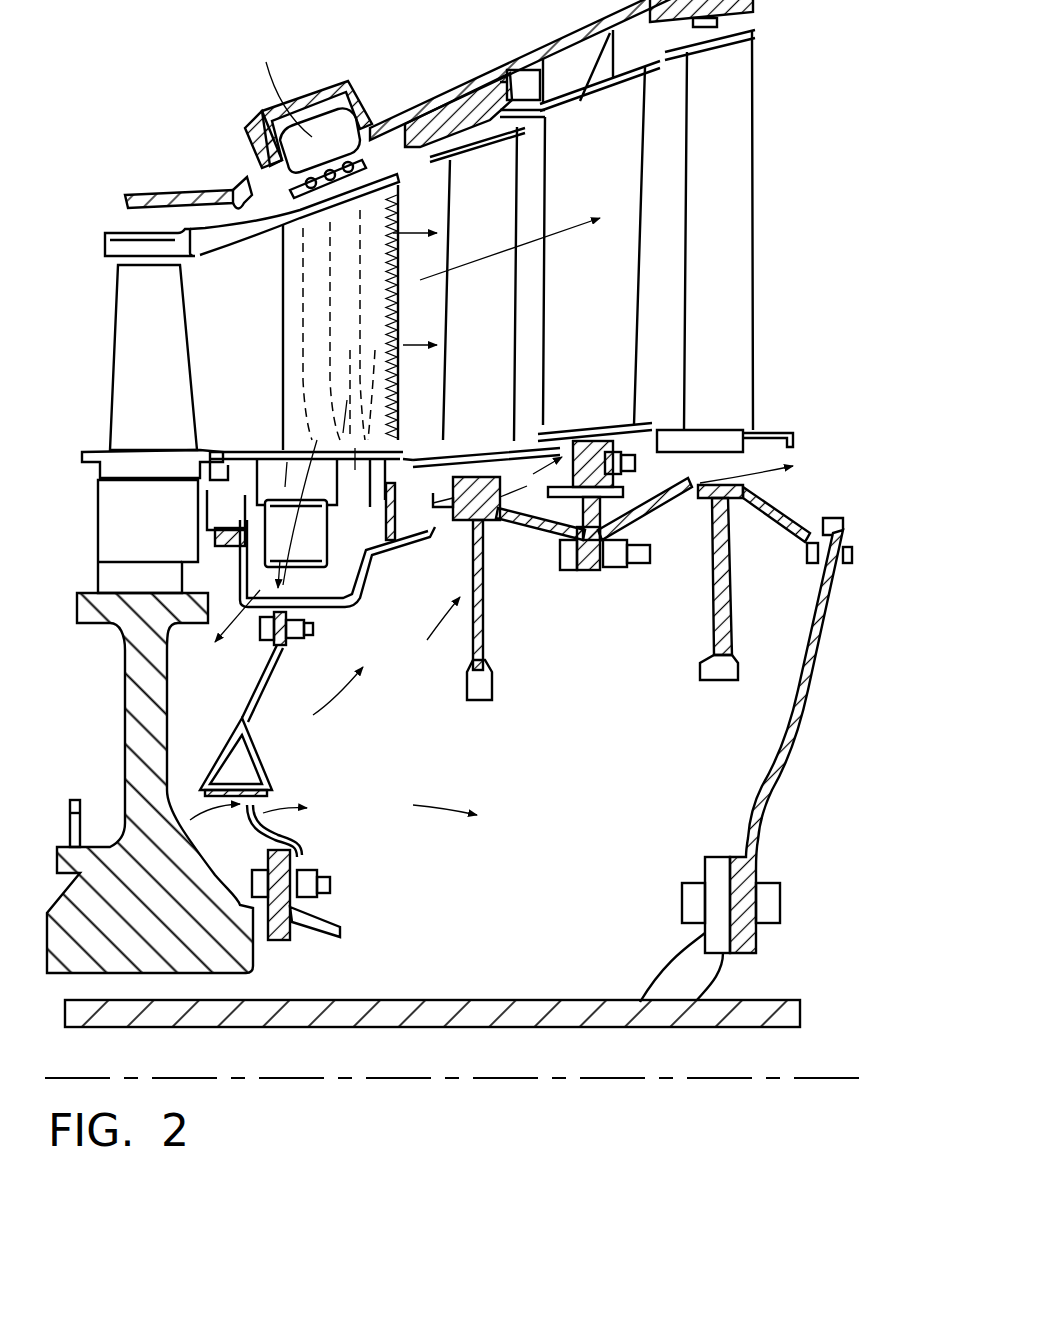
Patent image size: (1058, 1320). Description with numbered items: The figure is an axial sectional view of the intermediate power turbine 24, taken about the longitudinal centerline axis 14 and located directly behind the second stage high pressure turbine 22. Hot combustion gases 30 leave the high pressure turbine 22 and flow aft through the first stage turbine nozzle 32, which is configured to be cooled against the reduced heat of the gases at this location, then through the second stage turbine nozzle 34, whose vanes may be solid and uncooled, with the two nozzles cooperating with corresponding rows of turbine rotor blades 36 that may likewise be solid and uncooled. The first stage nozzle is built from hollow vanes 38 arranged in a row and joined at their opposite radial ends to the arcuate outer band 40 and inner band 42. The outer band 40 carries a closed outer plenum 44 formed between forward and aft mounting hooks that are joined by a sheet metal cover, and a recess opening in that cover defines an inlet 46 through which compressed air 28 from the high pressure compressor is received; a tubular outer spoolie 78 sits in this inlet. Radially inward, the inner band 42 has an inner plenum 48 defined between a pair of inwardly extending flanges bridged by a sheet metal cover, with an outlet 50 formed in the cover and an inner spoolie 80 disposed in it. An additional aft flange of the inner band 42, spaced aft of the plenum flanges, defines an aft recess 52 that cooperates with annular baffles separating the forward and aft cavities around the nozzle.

The axial centerline axis 14 is at (540, 1080).
The high pressure turbine 22 is at (102, 655).
The intermediate power turbine 24 is at (767, 130).
The compressed air 28 is at (266, 62).
The combustion gases 30 is at (155, 372).
The first stage turbine nozzle 32 is at (408, 208).
The second stage turbine nozzle 34 is at (616, 290).
The turbine rotor blades 36 is at (496, 326).
The vanes 38 is at (348, 316).
The outer band 40 is at (233, 250).
The inner band 42 is at (260, 450).
The outer plenum 44 is at (368, 113).
The inlet 46 is at (322, 150).
The inner plenum 48 is at (273, 470).
The outlet 50 is at (320, 508).
The aft recess 52 is at (370, 497).
The outer spoolie 78 is at (268, 118).
The inner spoolie 80 is at (297, 570).